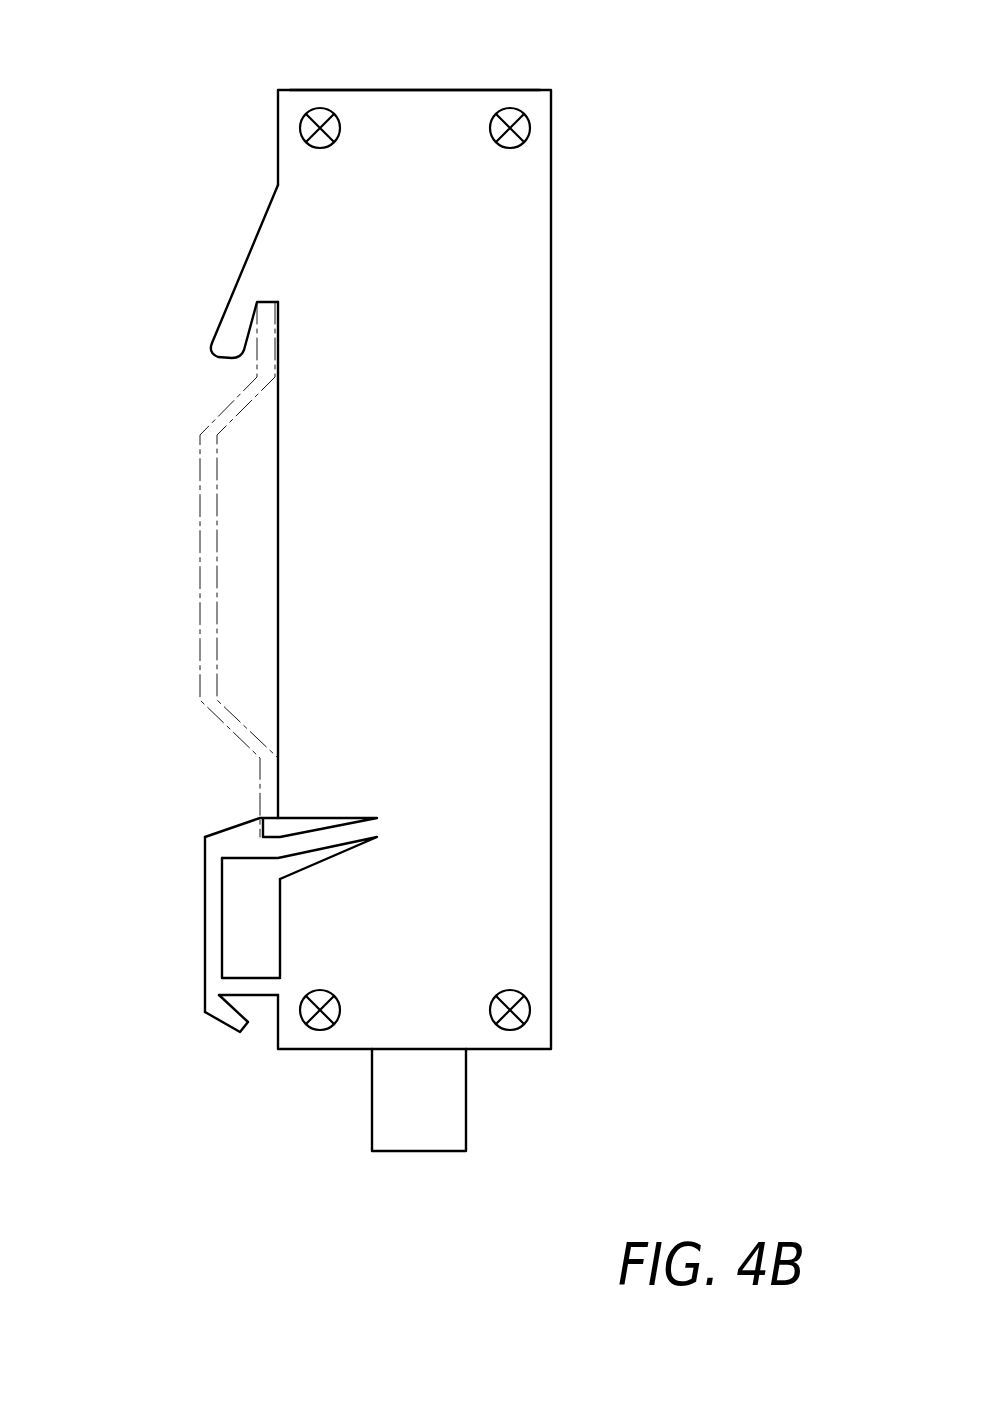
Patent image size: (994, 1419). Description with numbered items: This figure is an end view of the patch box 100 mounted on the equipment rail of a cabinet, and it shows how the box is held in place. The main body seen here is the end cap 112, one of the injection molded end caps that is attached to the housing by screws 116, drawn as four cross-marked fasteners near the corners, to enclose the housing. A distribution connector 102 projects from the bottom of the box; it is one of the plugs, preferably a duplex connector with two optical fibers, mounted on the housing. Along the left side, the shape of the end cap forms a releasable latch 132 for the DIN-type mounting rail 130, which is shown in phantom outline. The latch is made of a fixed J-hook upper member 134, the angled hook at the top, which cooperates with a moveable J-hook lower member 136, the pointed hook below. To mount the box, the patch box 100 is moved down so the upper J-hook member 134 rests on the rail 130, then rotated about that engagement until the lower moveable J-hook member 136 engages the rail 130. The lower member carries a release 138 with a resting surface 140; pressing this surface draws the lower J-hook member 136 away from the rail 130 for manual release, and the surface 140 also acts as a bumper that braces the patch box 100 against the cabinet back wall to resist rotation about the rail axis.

The patch box 100 is at (552, 223).
The distribution connector 102 is at (401, 1151).
The end cap 112 is at (408, 108).
The screws 116 is at (320, 108).
The mounting rail 130 is at (200, 587).
The releasable latch 132 is at (212, 927).
The fixed J-hook upper member 134 is at (223, 357).
The moveable J-hook lower member 136 is at (232, 825).
The release 138 is at (223, 1013).
The resting surface 140 is at (203, 965).